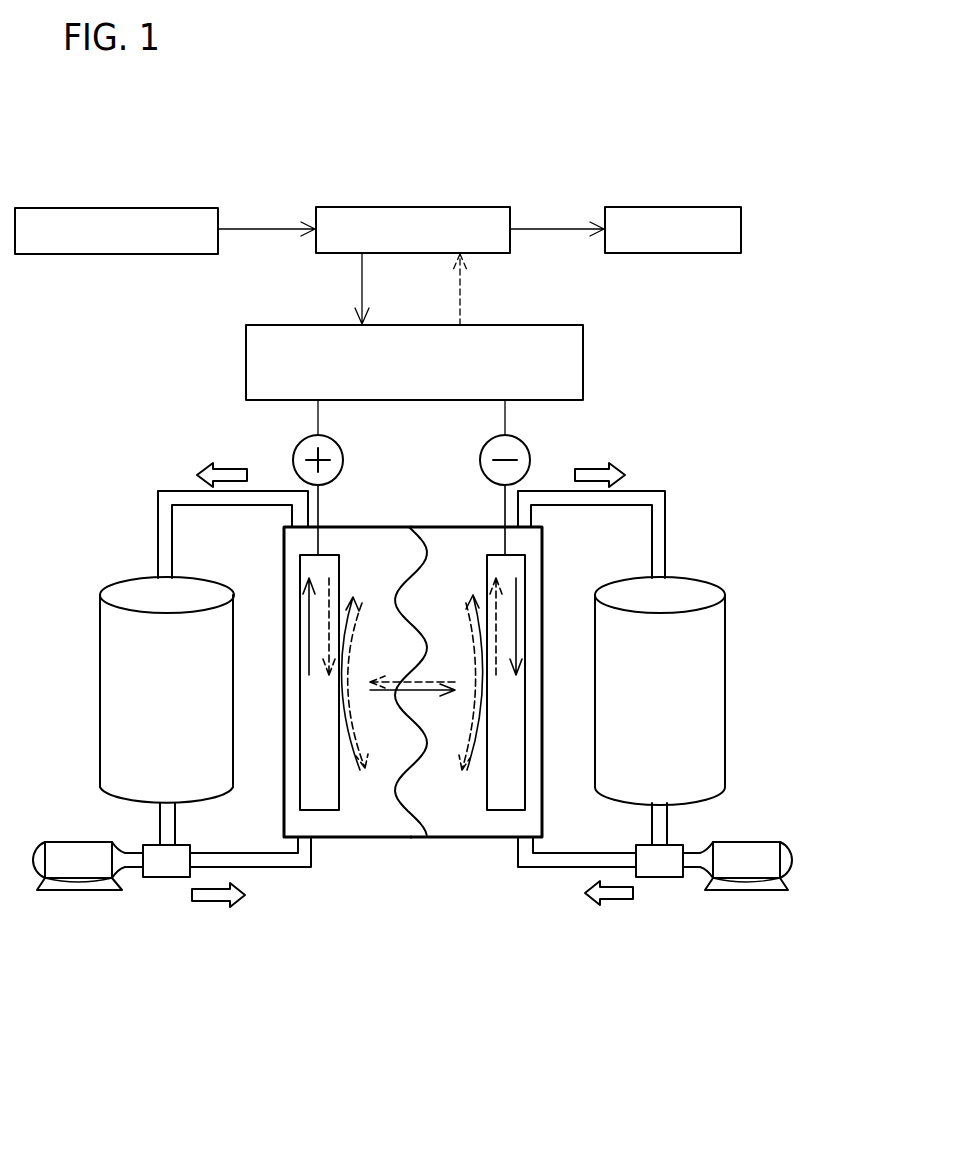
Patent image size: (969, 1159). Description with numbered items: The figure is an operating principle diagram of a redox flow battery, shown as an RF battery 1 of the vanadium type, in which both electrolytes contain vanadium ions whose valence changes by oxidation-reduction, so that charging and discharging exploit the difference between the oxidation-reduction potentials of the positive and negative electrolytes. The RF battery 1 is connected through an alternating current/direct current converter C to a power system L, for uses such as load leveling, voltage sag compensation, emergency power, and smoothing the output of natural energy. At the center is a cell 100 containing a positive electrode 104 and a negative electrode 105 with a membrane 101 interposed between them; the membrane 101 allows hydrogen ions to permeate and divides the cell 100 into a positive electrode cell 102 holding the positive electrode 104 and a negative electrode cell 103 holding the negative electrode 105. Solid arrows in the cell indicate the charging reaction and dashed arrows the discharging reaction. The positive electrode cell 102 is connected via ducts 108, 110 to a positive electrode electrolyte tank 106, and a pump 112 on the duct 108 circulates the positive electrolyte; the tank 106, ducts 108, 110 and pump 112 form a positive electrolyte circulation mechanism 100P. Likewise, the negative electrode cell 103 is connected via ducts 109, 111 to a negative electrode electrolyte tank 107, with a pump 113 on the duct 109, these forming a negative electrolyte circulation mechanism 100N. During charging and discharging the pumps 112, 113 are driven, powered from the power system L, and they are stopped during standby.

The RF battery 1 is at (706, 424).
The power system L is at (605, 190).
The alternating current/direct current converter C is at (583, 360).
The cell 100 is at (485, 933).
The membrane 101 is at (420, 823).
The positive electrode cell 102 is at (350, 840).
The negative electrode cell 103 is at (480, 840).
The positive electrode 104 is at (298, 800).
The negative electrode 105 is at (528, 800).
The positive electrode electrolyte tank 106 is at (118, 583).
The negative electrode electrolyte tank 107 is at (706, 583).
The duct 108 is at (267, 872).
The duct 109 is at (557, 868).
The duct 110 is at (175, 490).
The duct 111 is at (648, 490).
The pump 112 is at (60, 842).
The pump 113 is at (765, 842).
The positive electrolyte circulation mechanism 100P is at (112, 916).
The negative electrolyte circulation mechanism 100N is at (716, 916).